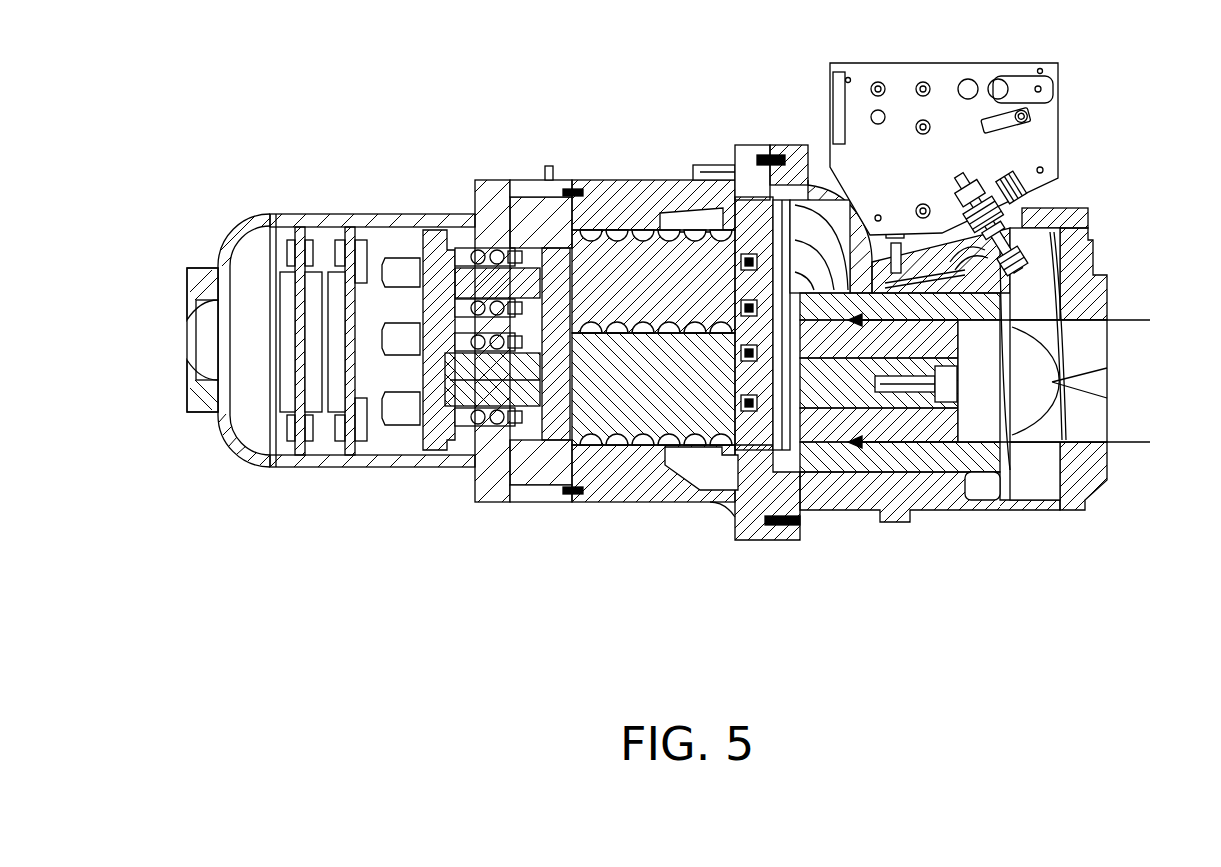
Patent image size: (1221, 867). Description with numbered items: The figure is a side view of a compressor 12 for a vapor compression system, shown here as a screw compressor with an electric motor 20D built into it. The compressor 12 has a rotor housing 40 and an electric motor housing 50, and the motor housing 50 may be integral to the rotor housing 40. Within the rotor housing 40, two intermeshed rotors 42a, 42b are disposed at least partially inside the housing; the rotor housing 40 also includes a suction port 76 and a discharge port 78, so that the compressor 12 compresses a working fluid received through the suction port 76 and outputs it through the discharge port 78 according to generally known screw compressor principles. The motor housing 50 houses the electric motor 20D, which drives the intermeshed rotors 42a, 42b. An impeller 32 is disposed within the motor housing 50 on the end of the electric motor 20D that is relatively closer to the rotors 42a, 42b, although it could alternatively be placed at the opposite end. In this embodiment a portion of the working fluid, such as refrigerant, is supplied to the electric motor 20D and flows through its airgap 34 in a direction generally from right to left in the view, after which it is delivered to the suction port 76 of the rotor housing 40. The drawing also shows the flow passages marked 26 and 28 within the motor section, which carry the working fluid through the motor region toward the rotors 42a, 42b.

The compressor 12 is at (140, 116).
The electric motor 20D is at (1004, 470).
The gas passage 26 is at (900, 382).
The inner passage wall 28 is at (879, 381).
The impeller 32 is at (790, 462).
The airgap 34 is at (992, 337).
The rotor housing 40 is at (617, 503).
The rotor 42a is at (675, 293).
The rotor 42b is at (675, 395).
The electric motor housing 50 is at (948, 512).
The suction port 76 is at (690, 222).
The discharge port 78 is at (572, 320).